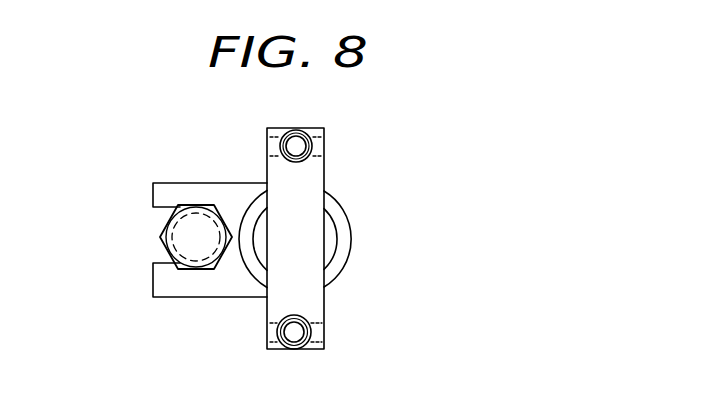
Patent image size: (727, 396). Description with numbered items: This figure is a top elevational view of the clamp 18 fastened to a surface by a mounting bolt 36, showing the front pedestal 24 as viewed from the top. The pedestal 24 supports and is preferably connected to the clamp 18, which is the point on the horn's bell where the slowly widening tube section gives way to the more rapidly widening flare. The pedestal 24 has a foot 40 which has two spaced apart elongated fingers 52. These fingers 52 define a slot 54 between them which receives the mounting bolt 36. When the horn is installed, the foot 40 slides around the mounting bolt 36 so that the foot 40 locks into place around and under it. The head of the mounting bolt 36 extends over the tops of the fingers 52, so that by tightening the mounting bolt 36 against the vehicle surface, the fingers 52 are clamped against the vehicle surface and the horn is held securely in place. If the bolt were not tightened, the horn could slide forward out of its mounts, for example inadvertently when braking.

The clamp 18 is at (281, 145).
The front pedestal 24 is at (335, 263).
The mounting bolt 36 is at (158, 236).
The foot 40 is at (252, 344).
The elongated fingers 52 is at (168, 181).
The slot 54 is at (157, 247).